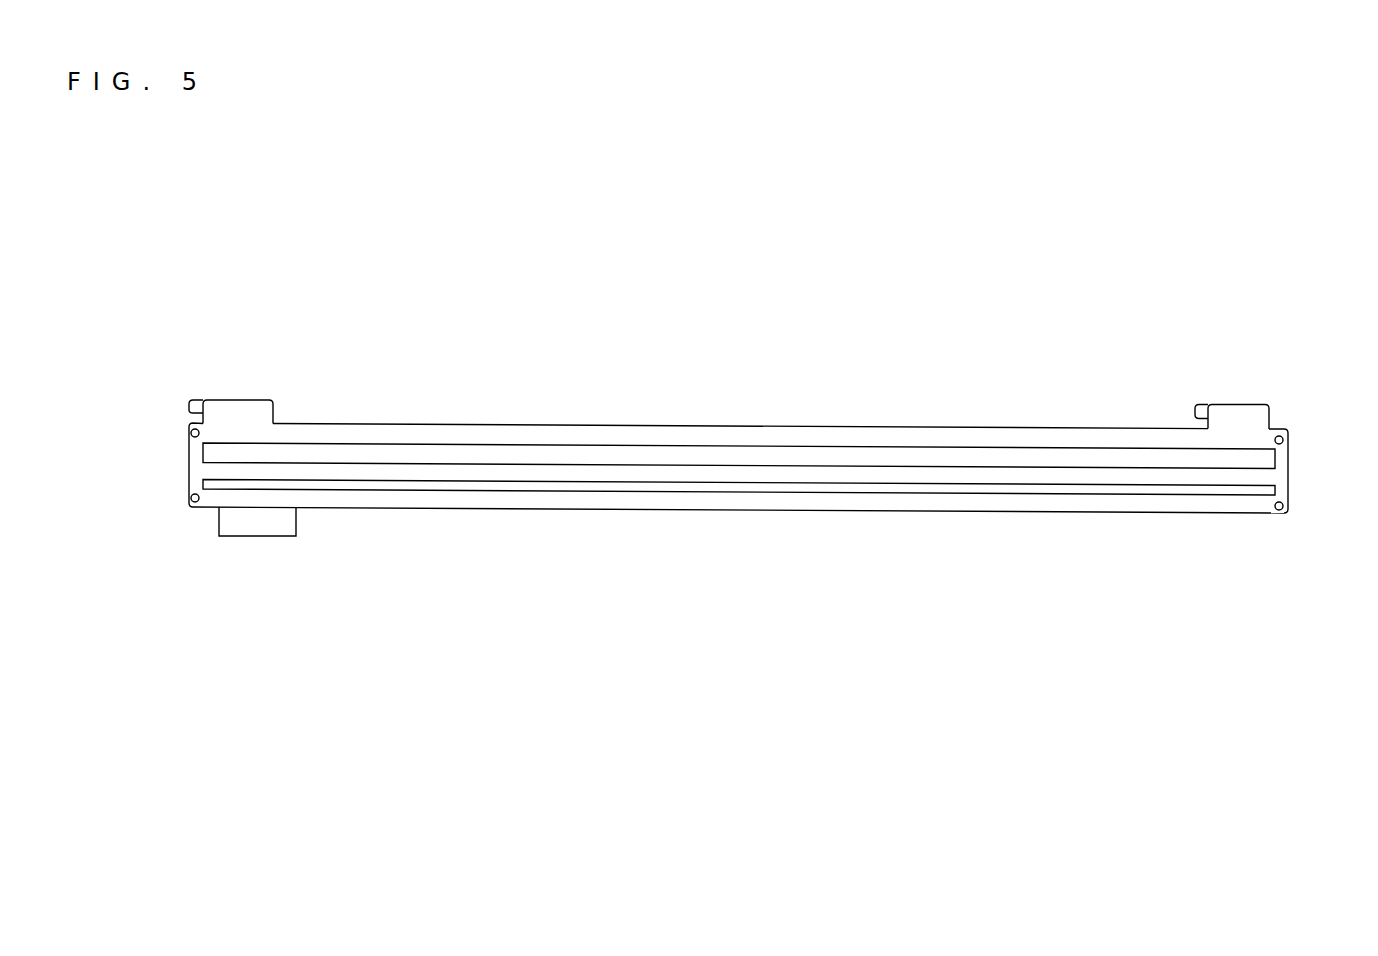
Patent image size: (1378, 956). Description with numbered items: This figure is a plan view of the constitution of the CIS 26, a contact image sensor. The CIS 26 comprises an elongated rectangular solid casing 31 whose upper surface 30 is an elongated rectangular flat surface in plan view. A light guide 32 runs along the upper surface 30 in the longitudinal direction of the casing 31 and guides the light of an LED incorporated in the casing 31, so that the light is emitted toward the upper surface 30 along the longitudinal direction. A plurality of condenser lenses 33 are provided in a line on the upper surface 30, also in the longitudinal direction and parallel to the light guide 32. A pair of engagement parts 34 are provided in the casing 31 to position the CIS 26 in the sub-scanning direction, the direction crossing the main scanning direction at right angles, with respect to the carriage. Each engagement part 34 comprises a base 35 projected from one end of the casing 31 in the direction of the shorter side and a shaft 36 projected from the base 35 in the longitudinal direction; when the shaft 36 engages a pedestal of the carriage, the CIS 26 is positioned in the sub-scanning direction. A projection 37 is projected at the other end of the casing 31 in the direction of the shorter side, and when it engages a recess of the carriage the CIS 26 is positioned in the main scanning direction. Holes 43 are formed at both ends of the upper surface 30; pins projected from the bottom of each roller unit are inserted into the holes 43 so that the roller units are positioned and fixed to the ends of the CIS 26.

The CIS 26 is at (955, 588).
The upper surface 30 is at (543, 433).
The casing 31 is at (843, 513).
The light guide 32 is at (438, 443).
The condenser lenses 33 is at (437, 489).
The engagement parts 34 is at (215, 382).
The base 35 is at (253, 400).
The shaft 36 is at (190, 404).
The projection 37 is at (237, 536).
The holes 43 is at (191, 433).